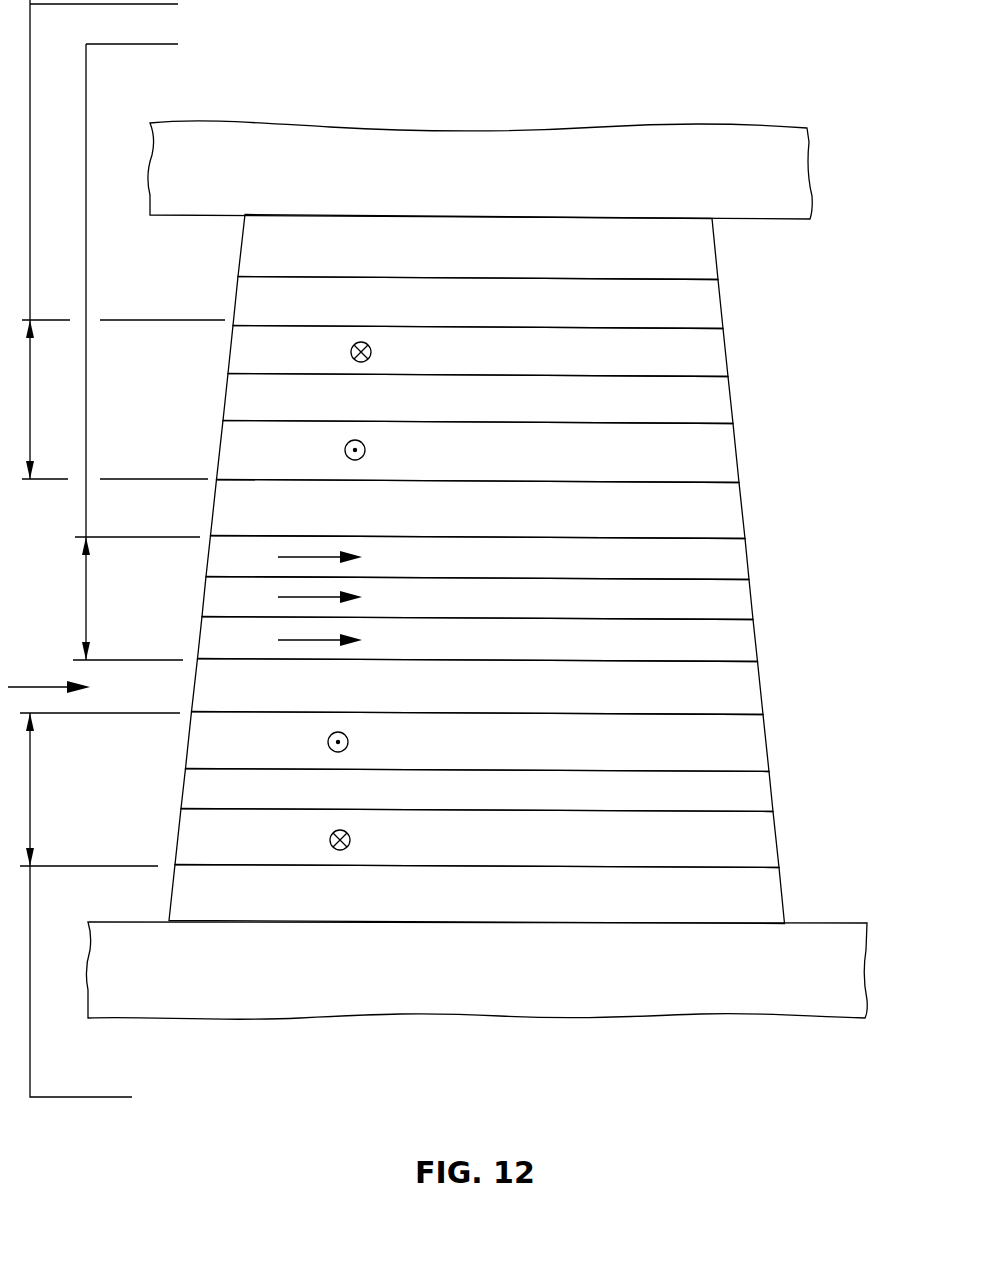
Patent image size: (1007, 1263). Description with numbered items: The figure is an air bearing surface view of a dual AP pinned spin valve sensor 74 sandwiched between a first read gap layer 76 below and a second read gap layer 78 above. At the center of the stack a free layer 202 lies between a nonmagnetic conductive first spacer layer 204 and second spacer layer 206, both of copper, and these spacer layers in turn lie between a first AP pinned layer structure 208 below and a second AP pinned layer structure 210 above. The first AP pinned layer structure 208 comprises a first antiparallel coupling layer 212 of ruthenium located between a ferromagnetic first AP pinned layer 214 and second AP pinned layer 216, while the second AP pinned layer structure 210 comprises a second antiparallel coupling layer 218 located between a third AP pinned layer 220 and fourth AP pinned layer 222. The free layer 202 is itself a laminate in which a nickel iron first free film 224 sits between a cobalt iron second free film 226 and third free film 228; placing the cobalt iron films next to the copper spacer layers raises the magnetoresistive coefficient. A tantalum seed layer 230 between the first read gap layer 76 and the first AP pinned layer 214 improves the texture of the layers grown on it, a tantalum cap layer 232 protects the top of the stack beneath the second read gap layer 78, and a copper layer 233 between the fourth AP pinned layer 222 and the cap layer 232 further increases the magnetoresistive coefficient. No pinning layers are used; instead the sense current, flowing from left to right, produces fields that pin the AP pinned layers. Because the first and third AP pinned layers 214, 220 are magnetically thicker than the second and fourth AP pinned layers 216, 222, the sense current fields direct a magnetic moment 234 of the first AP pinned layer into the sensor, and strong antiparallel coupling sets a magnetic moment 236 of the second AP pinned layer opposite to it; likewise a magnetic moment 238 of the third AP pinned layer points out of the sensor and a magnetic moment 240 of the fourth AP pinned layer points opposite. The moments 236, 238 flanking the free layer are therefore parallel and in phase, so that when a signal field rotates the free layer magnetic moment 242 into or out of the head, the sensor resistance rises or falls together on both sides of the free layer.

The dual AP pinned spin valve sensor 74 is at (728, 84).
The first read gap layer 76 is at (822, 1005).
The second read gap layer 78 is at (797, 156).
The free layer 202 is at (235, 348).
The first spacer layer 204 is at (759, 691).
The second spacer layer 206 is at (740, 504).
The first AP pinned layer structure 208 is at (328, 912).
The second AP pinned layer structure 210 is at (355, 239).
The first antiparallel coupling layer 212 is at (769, 794).
The first AP pinned layer 214 is at (774, 841).
The second AP pinned layer 216 is at (765, 748).
The second antiparallel coupling layer 218 is at (730, 400).
The third AP pinned layer 220 is at (735, 447).
The fourth AP pinned layer 222 is at (724, 349).
The first free film 224 is at (749, 598).
The second free film 226 is at (754, 641).
The third free film 228 is at (745, 558).
The seed layer 230 is at (780, 897).
The cap layer 232 is at (713, 251).
The copper layer 233 is at (719, 303).
The magnetic moment of the first AP pinned layer 234 is at (329, 840).
The magnetic moment of the second AP pinned layer 236 is at (327, 742).
The magnetic moment of the third AP pinned layer 238 is at (344, 450).
The magnetic moment of the fourth AP pinned layer 240 is at (350, 352).
The magnetic moment of the free layer 242 is at (304, 556).